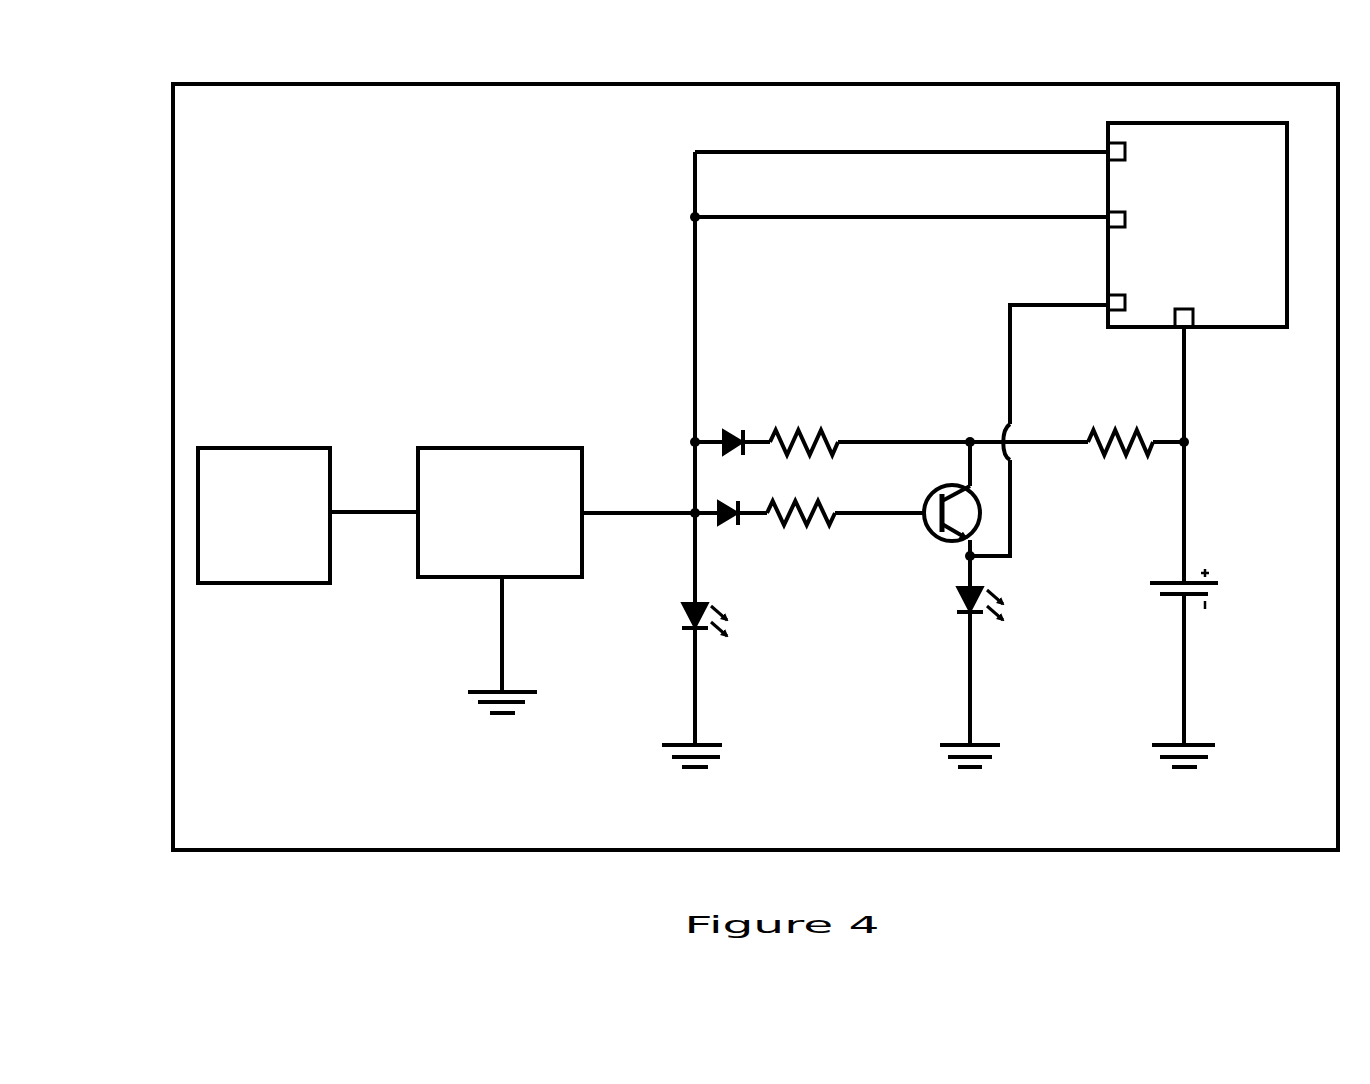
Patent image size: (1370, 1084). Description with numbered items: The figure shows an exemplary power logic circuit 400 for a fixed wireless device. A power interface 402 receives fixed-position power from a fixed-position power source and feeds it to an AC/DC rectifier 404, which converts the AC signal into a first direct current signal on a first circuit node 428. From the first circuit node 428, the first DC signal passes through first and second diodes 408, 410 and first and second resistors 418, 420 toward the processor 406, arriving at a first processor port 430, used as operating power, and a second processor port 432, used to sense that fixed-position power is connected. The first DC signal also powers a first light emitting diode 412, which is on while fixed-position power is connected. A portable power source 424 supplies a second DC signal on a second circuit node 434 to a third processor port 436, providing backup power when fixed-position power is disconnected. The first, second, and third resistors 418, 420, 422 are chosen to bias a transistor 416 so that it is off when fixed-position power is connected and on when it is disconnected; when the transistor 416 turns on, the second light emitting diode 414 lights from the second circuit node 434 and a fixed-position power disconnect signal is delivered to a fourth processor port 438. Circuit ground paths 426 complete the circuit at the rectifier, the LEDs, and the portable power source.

The power logic circuit 400 is at (1068, 851).
The power interface 402 is at (262, 447).
The AC/DC rectifier 404 is at (485, 447).
The processor 406 is at (1190, 123).
The first diode 408 is at (724, 527).
The second diode 410 is at (727, 432).
The first light emitting diode 412 is at (681, 614).
The second light emitting diode 414 is at (957, 597).
The transistor 416 is at (930, 497).
The first resistor 418 is at (806, 527).
The second resistor 420 is at (822, 432).
The third resistor 422 is at (1100, 457).
The portable power source 424 is at (1160, 596).
The circuit ground paths 426 is at (508, 690).
The first circuit node 428 is at (616, 510).
The first processor port 430 is at (1126, 157).
The second processor port 432 is at (1126, 218).
The second circuit node 434 is at (1186, 501).
The third processor port 436 is at (1194, 315).
The fourth processor port 438 is at (1127, 297).